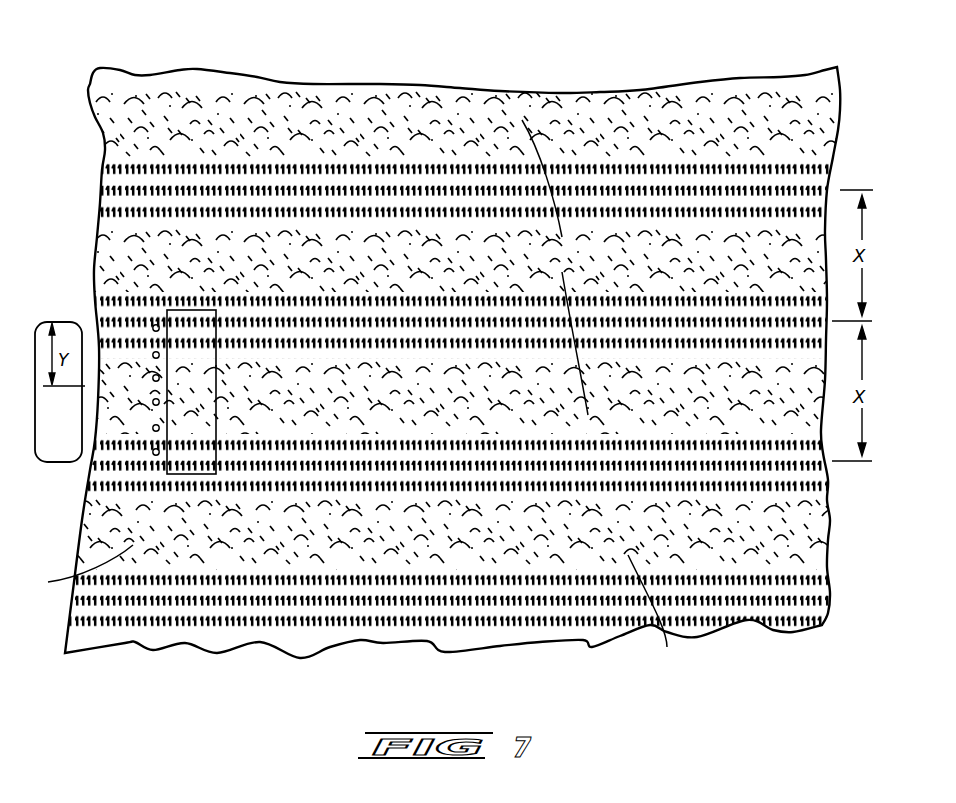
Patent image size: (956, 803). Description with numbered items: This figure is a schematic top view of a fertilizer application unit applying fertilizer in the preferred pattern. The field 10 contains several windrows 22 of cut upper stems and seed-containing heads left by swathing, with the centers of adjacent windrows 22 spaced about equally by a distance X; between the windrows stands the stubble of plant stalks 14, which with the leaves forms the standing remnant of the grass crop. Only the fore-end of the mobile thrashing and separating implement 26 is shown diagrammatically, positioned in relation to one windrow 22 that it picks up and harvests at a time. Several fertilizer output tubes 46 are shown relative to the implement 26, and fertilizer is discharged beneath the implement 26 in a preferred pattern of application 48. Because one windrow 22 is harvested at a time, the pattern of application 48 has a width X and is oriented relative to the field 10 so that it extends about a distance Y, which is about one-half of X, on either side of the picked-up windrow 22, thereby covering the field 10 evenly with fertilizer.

The field 10 is at (598, 70).
The plant stalks 14 is at (426, 118).
The windrows 22 is at (347, 403).
The mobile thrashing and separating implement 26 is at (217, 396).
The fertilizer output tubes 46 is at (153, 352).
The pattern of application 48 is at (55, 430).